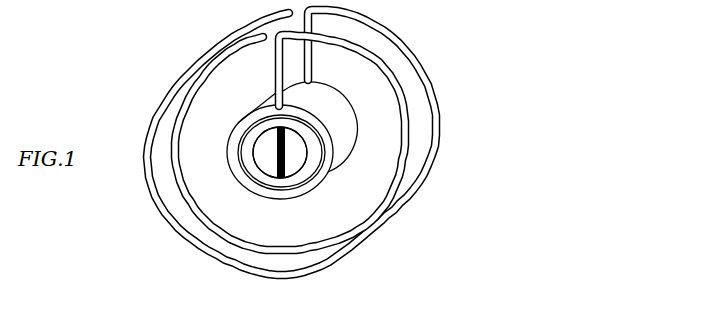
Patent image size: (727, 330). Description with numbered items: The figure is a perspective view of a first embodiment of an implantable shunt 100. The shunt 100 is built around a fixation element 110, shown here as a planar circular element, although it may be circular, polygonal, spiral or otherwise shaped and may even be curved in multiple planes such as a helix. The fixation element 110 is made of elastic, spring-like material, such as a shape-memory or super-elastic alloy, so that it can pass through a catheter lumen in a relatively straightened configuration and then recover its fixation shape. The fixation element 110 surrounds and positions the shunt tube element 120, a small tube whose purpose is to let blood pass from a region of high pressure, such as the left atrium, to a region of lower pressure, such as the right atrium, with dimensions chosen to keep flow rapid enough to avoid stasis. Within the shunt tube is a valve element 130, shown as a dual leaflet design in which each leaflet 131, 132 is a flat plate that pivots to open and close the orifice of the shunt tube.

The shunt 100 is at (348, 142).
The fixation element 110 is at (413, 198).
The shunt tube element 120 is at (253, 138).
The valve element 130 is at (283, 170).
The leaflet 131 is at (295, 163).
The leaflet 132 is at (267, 165).